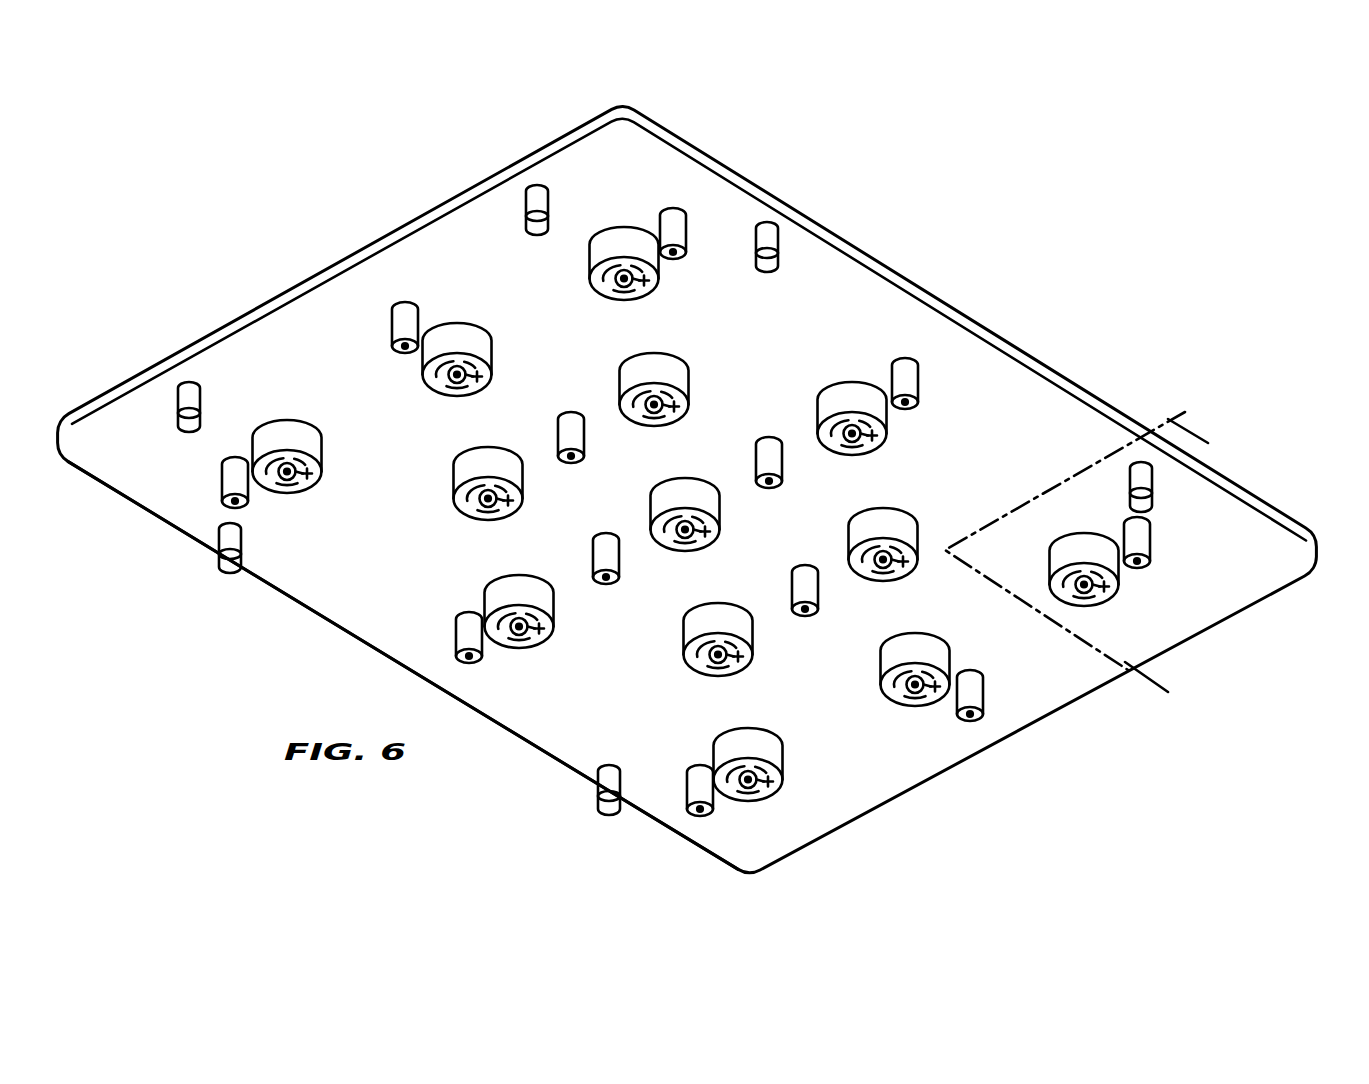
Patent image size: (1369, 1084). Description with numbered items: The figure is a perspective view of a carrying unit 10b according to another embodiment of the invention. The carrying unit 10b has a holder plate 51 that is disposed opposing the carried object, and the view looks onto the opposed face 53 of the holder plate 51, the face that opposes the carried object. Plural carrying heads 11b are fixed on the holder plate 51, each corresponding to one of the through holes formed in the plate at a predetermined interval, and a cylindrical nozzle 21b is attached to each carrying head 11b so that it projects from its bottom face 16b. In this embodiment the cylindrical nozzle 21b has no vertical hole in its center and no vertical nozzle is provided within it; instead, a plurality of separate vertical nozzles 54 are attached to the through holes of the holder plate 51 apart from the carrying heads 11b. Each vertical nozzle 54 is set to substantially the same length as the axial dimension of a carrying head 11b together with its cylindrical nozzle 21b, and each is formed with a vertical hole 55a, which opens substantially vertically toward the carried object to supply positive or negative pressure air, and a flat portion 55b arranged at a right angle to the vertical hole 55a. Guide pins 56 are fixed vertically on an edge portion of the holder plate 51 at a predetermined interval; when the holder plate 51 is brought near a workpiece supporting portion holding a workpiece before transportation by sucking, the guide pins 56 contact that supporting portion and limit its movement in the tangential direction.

The carrying unit 10b is at (687, 506).
The holder plate 51 is at (650, 135).
The opposed face 53 is at (530, 740).
The carrying head 11b is at (590, 262).
The bottom face 16b is at (624, 300).
The cylindrical nozzle 21b is at (604, 292).
The vertical nozzle 54 is at (686, 226).
The vertical hole 55a is at (673, 255).
The flat portion 55b is at (683, 256).
The guide pin 56 is at (548, 200).